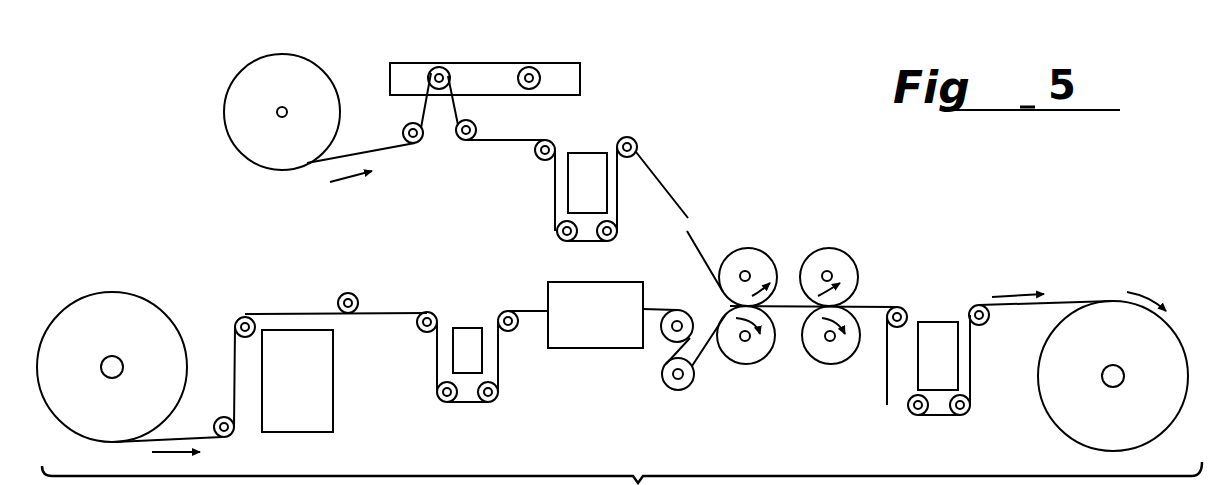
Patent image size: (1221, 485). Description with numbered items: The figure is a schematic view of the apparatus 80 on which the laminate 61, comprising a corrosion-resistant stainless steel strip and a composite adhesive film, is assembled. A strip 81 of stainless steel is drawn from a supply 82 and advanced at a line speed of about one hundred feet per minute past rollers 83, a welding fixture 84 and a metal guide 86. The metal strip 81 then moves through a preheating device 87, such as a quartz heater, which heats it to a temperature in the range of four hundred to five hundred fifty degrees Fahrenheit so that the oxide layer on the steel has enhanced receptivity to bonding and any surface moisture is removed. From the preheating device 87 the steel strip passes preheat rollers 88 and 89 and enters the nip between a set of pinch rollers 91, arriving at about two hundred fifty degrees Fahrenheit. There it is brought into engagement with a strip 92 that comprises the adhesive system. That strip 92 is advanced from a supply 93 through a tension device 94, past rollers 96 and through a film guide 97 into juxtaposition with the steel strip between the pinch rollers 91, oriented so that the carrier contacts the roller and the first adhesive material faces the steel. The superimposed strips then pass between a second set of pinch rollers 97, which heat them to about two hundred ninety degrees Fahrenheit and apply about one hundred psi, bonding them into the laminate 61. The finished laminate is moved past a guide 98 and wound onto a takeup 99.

The apparatus 80 is at (958, 234).
The laminate 61 is at (1065, 302).
The strip 81 is at (208, 438).
The supply 82 is at (115, 300).
The rollers 83 is at (247, 318).
The welding fixture 84 is at (305, 432).
The metal guide 86 is at (468, 373).
The preheating device 87 is at (570, 348).
The preheat roller 88 is at (682, 310).
The preheat roller 89 is at (675, 390).
The pinch rollers 91 is at (755, 255).
The strip 92 is at (397, 148).
The supply 93 is at (234, 117).
The tension device 94 is at (580, 82).
The rollers 96 is at (478, 128).
The film guide / pinch rollers 97 is at (607, 153).
The guide 98 is at (941, 390).
The takeup 99 is at (1088, 435).